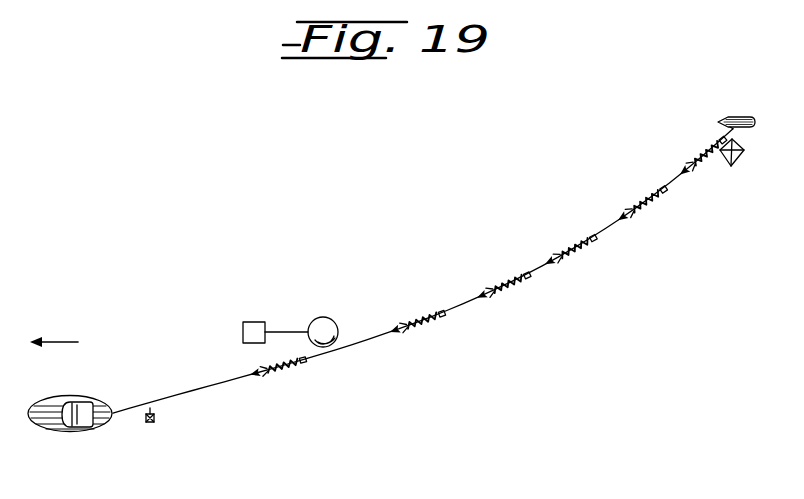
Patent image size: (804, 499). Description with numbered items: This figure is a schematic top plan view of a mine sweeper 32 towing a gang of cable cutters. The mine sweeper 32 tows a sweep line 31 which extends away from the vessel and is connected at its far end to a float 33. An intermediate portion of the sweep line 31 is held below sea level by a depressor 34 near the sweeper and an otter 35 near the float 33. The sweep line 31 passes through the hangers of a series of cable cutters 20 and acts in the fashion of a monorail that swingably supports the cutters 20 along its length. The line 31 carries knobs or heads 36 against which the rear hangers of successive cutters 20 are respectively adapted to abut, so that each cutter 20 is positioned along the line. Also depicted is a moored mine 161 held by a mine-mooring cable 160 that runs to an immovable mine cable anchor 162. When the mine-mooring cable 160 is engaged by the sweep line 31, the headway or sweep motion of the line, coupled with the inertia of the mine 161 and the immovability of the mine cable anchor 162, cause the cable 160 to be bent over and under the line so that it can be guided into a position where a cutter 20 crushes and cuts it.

The cable cutter 20 is at (272, 378).
The sweep line 31 is at (345, 348).
The mine sweeper 32 is at (70, 432).
The float 33 is at (735, 117).
The depressor 34 is at (156, 418).
The otter 35 is at (727, 168).
The knob or head 36 is at (304, 365).
The mine-mooring cable 160 is at (287, 331).
The mine 161 is at (335, 321).
The mine cable anchor 162 is at (252, 322).